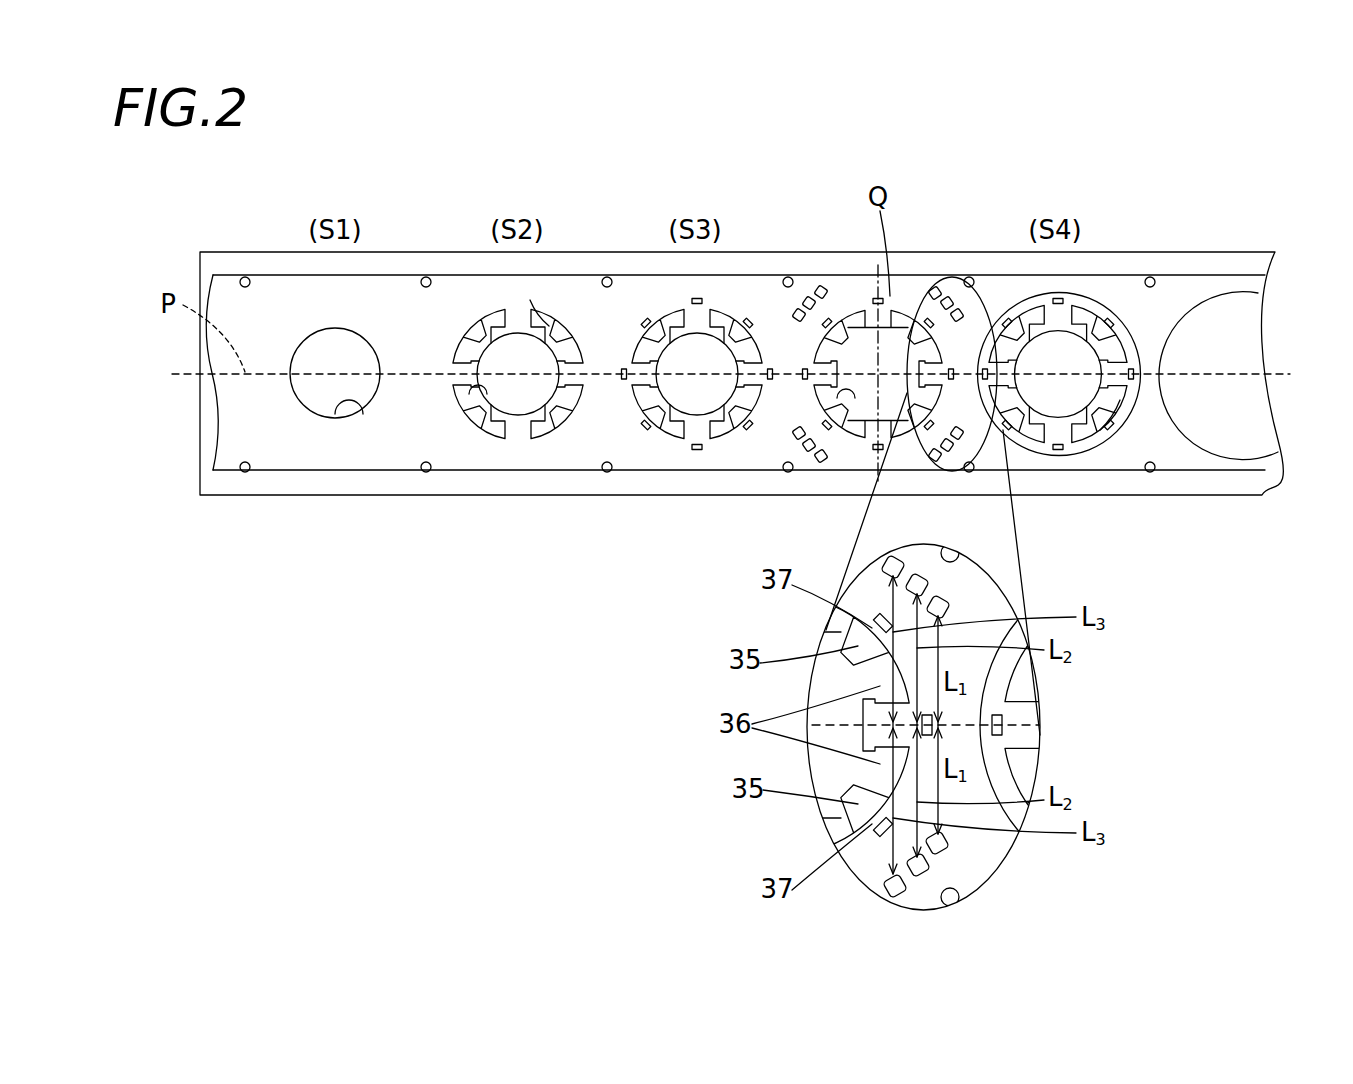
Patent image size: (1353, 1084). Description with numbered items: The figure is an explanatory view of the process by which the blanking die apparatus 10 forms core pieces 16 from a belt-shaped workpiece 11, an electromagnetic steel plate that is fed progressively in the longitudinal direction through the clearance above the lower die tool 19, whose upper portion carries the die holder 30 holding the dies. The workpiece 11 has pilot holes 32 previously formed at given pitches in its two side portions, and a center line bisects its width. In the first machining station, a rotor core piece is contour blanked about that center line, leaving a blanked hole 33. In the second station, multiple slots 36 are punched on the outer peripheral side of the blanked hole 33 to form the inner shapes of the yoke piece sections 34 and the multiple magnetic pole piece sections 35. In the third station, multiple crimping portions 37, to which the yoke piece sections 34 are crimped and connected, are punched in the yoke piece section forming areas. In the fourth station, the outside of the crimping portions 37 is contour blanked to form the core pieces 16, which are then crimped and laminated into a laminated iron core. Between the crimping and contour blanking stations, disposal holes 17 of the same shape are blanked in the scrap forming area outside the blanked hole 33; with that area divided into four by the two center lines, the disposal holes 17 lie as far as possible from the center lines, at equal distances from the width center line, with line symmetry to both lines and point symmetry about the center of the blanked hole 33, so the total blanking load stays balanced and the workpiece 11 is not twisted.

The blanking die apparatus 10 is at (626, 177).
The workpiece 11 is at (300, 453).
The core pieces 16 is at (1108, 302).
The disposal holes 17 is at (820, 287).
The lower die tool 19 is at (947, 239).
The die holder 30 is at (512, 486).
The pilot holes 32 is at (245, 277).
The blanked hole 33 is at (361, 415).
The yoke piece sections 34 is at (1092, 440).
The magnetic pole piece sections 35 is at (1063, 312).
The slots 36 is at (574, 350).
The crimping portions 37 is at (747, 322).